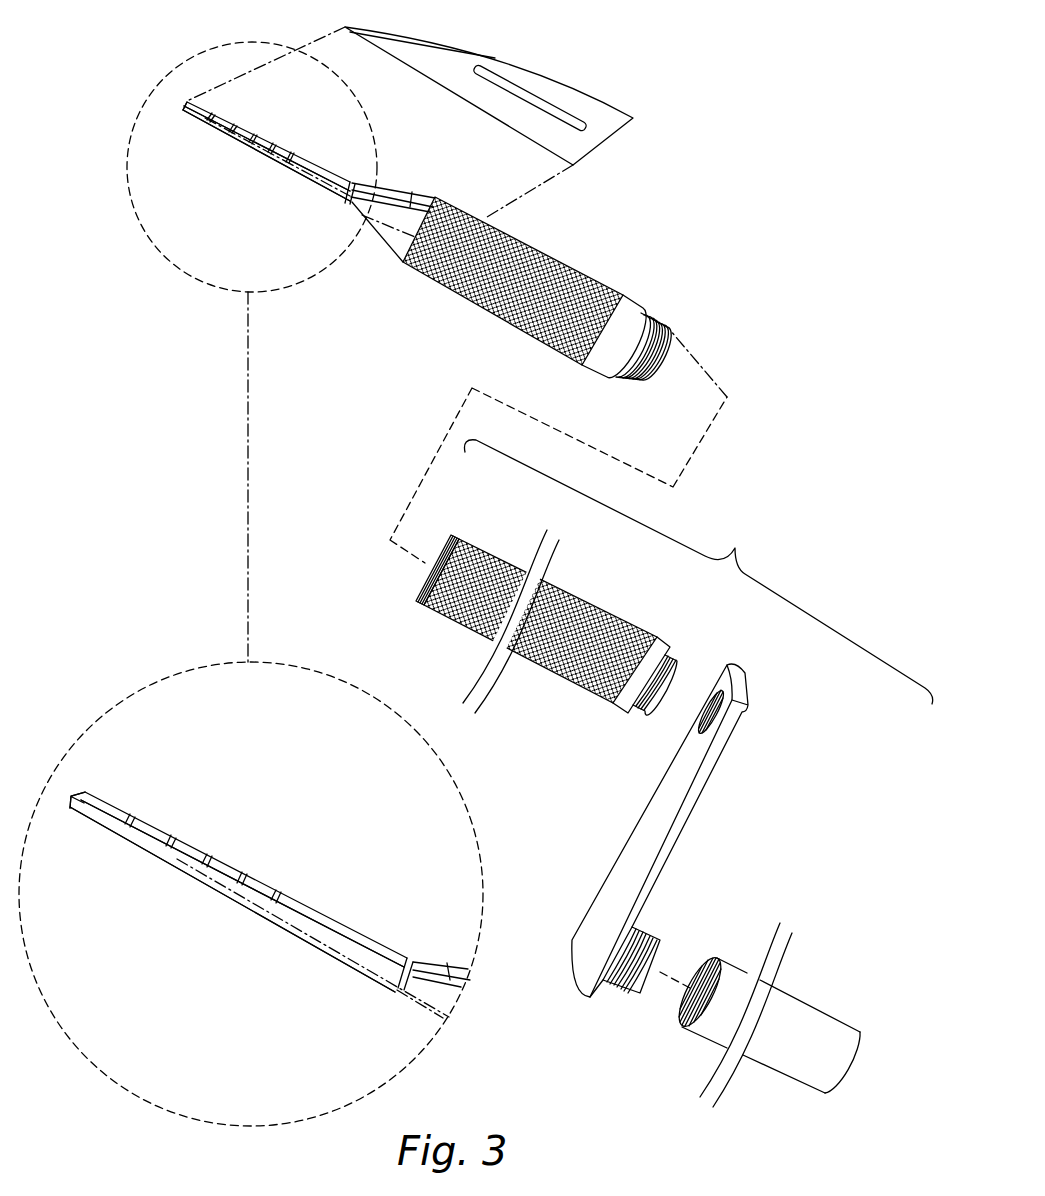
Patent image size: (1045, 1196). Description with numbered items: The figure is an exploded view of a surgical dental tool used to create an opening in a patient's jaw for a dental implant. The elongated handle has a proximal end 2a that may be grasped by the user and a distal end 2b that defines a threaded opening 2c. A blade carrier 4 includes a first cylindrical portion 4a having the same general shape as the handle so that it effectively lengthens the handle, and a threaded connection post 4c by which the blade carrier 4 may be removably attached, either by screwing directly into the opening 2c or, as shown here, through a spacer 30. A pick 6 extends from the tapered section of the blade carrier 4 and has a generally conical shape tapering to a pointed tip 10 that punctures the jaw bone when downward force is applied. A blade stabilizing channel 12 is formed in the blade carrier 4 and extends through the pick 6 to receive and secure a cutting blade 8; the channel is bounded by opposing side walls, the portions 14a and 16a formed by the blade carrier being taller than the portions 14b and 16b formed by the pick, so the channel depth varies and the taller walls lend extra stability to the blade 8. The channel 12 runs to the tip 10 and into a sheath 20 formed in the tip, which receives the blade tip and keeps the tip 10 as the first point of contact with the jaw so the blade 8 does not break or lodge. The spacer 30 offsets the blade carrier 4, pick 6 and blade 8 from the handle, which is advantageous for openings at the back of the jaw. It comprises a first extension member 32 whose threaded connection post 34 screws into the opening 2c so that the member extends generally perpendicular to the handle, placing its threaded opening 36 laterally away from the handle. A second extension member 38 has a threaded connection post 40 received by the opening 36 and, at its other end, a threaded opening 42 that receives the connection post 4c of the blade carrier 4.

The proximal end 2a is at (826, 1008).
The distal end 2b is at (722, 962).
The threaded opening 2c is at (684, 1007).
The blade carrier 4 is at (533, 286).
The first cylindrical portion 4a is at (540, 243).
The threaded connection post 4c is at (648, 313).
The pick 6 is at (283, 170).
The cutting blade 8 is at (524, 67).
The pointed tip 10 is at (184, 127).
The blade stabilizing channel 12 is at (257, 106).
The first side wall 14a is at (360, 186).
The first side wall 14b is at (258, 130).
The second side wall 16a is at (414, 192).
The second side wall 16b is at (277, 150).
The sheath 20 is at (186, 100).
The spacer 30 is at (639, 718).
The first extension member 32 is at (688, 823).
The threaded connection post 34 is at (633, 927).
The threaded opening 36 is at (705, 705).
The second extension member 38 is at (563, 587).
The threaded connection post 40 is at (668, 652).
The threaded opening 42 is at (418, 580).